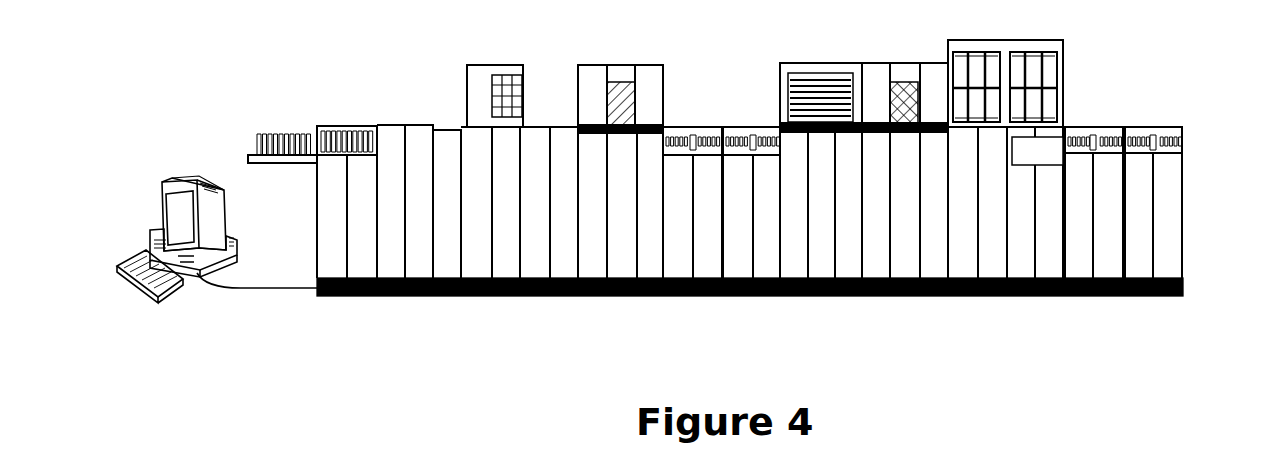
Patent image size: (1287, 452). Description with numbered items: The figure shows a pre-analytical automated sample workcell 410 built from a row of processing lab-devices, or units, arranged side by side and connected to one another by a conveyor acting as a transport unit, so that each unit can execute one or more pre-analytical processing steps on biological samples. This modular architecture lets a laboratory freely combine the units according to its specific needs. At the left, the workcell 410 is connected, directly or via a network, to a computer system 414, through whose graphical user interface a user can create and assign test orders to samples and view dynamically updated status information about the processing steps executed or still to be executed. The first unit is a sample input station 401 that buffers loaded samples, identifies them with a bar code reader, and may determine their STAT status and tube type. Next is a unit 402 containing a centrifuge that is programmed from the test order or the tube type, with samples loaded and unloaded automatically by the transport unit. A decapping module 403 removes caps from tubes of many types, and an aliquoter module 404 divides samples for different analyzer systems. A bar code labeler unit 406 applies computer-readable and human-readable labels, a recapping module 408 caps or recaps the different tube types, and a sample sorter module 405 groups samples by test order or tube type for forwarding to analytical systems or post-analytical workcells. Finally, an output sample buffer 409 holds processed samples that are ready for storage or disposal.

The sample input station 401 is at (427, 300).
The centrifuge unit 402 is at (460, 300).
The decapping module 403 is at (665, 300).
The aliquoter module 404 is at (780, 300).
The sample sorter module 405 is at (1065, 300).
The bar code labeler unit 406 is at (782, 300).
The recapping module 408 is at (862, 300).
The output sample buffer 409 is at (1183, 300).
The pre-analytical automated sample workcell 410 is at (1286, 364).
The computer system 414 is at (192, 192).